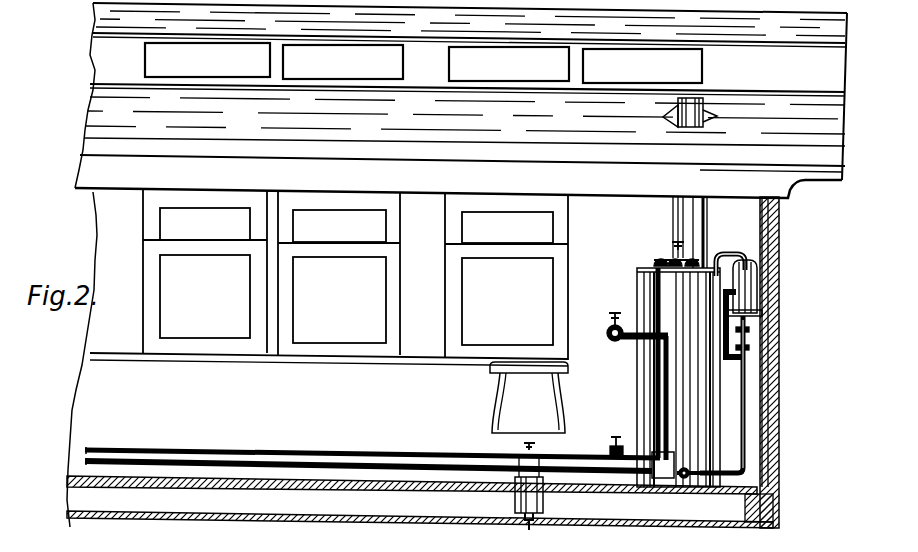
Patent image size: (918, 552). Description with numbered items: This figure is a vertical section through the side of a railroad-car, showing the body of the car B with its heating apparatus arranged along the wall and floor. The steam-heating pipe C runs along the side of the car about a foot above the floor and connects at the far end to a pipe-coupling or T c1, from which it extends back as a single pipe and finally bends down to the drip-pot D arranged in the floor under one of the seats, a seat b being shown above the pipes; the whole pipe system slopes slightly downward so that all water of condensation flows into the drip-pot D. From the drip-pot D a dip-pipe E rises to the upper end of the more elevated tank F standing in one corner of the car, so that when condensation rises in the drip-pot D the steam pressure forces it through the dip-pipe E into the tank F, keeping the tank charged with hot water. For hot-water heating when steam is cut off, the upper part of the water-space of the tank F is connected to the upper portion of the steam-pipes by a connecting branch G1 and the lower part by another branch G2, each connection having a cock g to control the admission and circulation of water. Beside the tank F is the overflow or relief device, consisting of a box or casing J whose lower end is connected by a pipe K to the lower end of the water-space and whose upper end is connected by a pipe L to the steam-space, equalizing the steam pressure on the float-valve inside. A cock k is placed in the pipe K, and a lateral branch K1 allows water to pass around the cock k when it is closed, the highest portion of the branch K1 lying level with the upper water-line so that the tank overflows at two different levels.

The body of the car B is at (457, 265).
The seat b is at (529, 397).
The steam-heating pipe C is at (330, 460).
The drip-pot D is at (544, 507).
The dip-pipe E is at (656, 372).
The tank F is at (678, 342).
The connecting branch G1 is at (664, 420).
The connecting branch G2 is at (600, 477).
The cock g is at (612, 322).
The box or casing J is at (765, 287).
The pipe K is at (747, 403).
The lateral branch K1 is at (735, 330).
The cock k is at (747, 340).
The pipe L is at (732, 258).
The pipe-coupling or T c1 is at (674, 479).